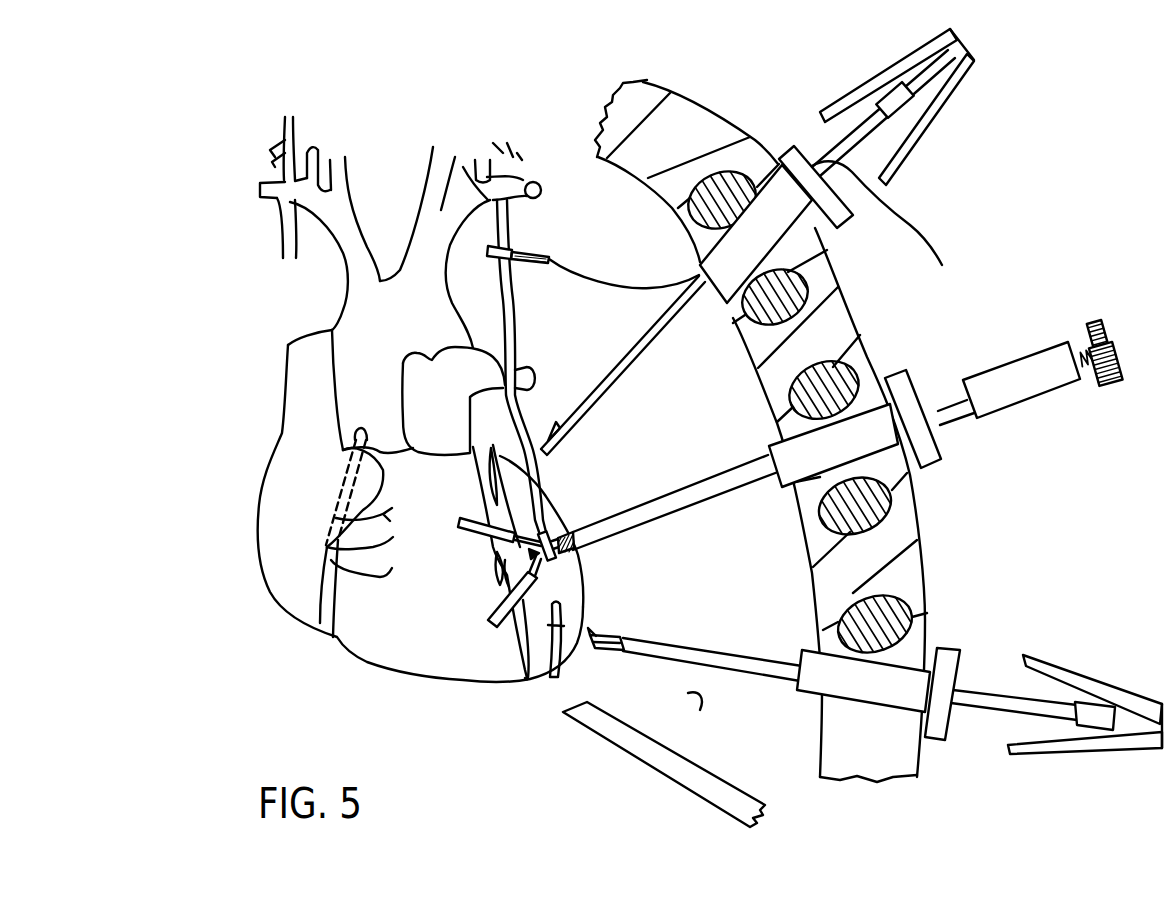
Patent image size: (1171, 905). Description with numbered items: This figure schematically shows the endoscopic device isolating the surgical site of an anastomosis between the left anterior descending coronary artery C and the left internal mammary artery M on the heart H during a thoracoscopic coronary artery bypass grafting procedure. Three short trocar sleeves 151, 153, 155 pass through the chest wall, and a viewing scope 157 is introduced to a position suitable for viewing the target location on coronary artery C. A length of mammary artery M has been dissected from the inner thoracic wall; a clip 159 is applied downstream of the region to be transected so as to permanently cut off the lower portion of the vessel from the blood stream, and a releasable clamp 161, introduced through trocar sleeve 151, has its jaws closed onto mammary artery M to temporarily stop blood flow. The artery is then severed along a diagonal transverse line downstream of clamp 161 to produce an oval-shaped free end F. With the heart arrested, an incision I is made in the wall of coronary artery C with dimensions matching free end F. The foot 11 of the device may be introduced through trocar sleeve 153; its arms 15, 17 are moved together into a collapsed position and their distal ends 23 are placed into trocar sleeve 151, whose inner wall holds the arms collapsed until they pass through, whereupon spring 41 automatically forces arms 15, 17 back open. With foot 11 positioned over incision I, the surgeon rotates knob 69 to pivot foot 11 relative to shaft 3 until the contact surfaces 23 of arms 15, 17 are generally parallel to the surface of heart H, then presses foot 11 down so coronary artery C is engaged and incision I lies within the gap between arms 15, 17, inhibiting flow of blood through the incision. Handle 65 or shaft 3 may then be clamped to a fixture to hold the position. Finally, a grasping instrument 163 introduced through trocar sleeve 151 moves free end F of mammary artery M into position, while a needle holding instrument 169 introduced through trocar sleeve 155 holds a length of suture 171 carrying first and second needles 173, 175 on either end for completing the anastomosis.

The shaft 3 is at (700, 482).
The foot 11 is at (570, 517).
The arm 15 is at (547, 531).
The arm 17 is at (568, 613).
The contact surfaces 23 is at (455, 519).
The spring 41 is at (500, 592).
The handle 65 is at (1002, 367).
The knob 69 is at (1092, 321).
The trocar sleeve 151 is at (783, 147).
The trocar sleeve 153 is at (895, 370).
The trocar sleeve 155 is at (946, 647).
The viewing scope 157 is at (613, 743).
The clip 159 is at (545, 632).
The releasable clamp 161 is at (488, 256).
The grasping instrument 163 is at (707, 328).
The needle holding instrument 169 is at (1070, 654).
The suture 171 is at (598, 646).
The first needle 173 is at (688, 693).
The second needle 175 is at (588, 628).
The left anterior descending coronary artery C is at (485, 488).
The free end F is at (497, 558).
The heart H is at (298, 643).
The incision I is at (497, 570).
The left internal mammary artery M is at (507, 230).